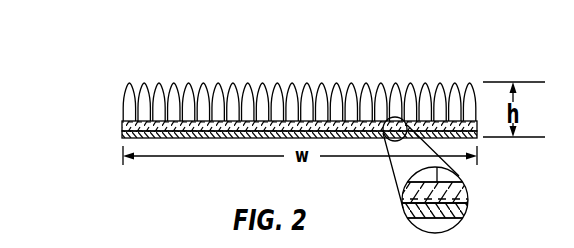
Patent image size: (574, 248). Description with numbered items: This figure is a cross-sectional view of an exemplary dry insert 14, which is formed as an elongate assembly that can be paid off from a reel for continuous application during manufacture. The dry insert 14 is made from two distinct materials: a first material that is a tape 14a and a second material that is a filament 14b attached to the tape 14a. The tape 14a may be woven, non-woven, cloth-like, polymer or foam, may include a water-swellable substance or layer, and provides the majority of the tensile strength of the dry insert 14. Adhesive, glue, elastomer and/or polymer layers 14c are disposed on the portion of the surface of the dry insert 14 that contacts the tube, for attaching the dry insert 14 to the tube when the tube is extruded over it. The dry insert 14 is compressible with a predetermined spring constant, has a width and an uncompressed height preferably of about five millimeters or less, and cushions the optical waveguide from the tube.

The dry insert 14 is at (146, 62).
The tape 14a is at (122, 127).
The filament 14b is at (124, 113).
The adhesive, glue, elastomer and/or polymer layers 14c is at (466, 206).